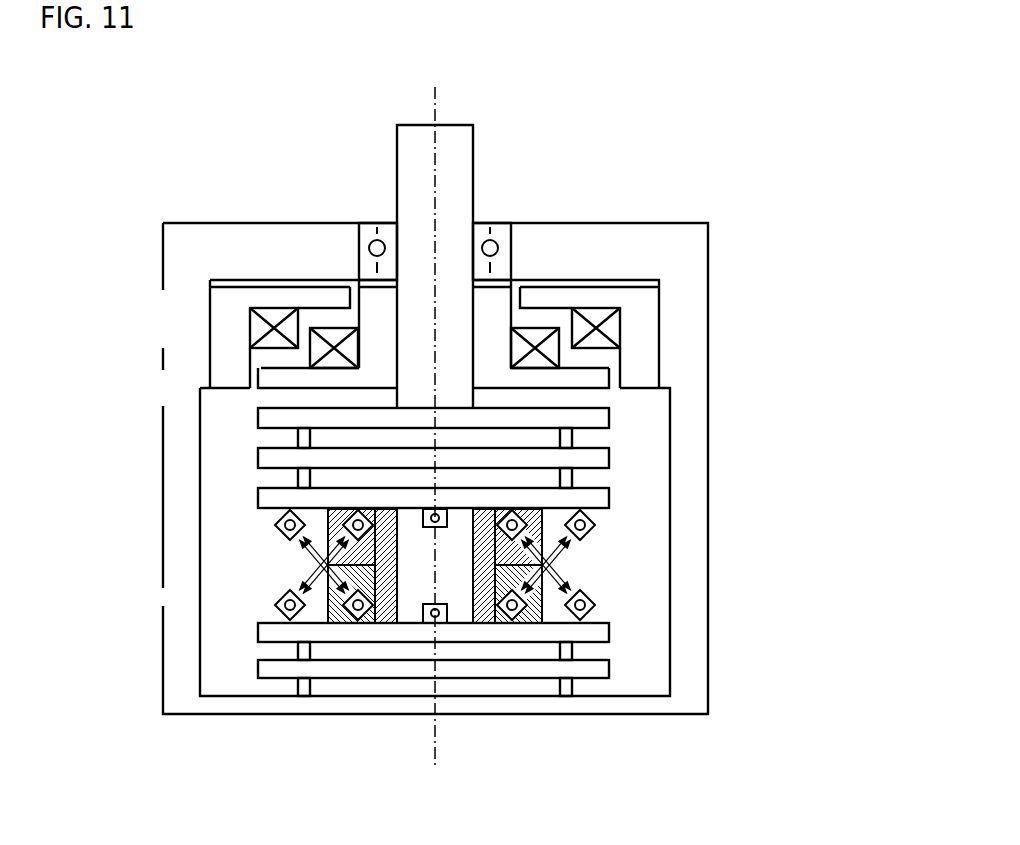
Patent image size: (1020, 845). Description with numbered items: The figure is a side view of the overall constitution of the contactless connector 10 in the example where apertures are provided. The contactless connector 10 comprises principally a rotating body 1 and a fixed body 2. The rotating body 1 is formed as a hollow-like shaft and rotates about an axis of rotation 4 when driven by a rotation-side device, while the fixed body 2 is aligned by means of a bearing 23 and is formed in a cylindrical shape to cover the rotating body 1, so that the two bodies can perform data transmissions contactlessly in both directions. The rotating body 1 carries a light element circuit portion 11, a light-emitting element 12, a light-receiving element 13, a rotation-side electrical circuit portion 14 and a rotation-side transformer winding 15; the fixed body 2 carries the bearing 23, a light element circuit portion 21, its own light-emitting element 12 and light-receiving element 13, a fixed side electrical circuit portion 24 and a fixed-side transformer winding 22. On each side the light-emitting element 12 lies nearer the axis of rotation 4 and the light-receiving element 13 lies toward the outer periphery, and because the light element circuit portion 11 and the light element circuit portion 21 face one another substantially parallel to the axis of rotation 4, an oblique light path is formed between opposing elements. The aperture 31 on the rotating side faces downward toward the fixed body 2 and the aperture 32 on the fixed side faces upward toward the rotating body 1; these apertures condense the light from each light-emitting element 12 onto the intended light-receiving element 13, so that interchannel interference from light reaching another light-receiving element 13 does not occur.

The rotating body 1 is at (417, 185).
The fixed body 2 is at (462, 703).
The axis of rotation 4 is at (440, 108).
The contactless connector 10 is at (577, 843).
The light element circuit portion 11 is at (267, 485).
The light-emitting element 12 is at (360, 510).
The light-receiving element 13 is at (282, 527).
The rotation-side electrical circuit portion 14 is at (295, 458).
The rotation-side transformer winding 15 is at (210, 277).
The light element circuit portion 21 is at (597, 628).
The fixed-side transformer winding 22 is at (612, 323).
The bearing 23 is at (483, 228).
The fixed side electrical circuit portion 24 is at (583, 717).
The aperture 31 is at (498, 508).
The aperture 32 is at (440, 620).